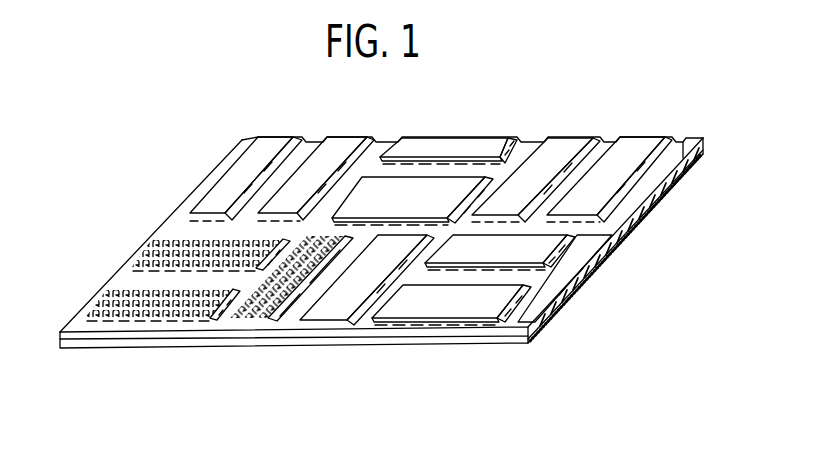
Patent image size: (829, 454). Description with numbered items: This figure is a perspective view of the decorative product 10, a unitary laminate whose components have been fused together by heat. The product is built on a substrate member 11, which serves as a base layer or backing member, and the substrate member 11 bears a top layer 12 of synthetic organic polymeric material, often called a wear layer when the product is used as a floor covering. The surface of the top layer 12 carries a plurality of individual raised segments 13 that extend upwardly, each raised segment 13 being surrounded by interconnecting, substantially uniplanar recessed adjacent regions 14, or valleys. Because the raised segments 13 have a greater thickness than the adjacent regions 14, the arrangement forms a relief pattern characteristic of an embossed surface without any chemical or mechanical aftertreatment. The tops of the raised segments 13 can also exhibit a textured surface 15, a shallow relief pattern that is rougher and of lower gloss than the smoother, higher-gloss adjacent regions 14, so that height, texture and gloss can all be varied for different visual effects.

The decorative product 10 is at (131, 358).
The substrate member 11 is at (478, 342).
The top layer 12 is at (330, 337).
The raised segments 13 is at (560, 139).
The adjacent regions 14 is at (316, 140).
The textured surface 15 is at (105, 297).